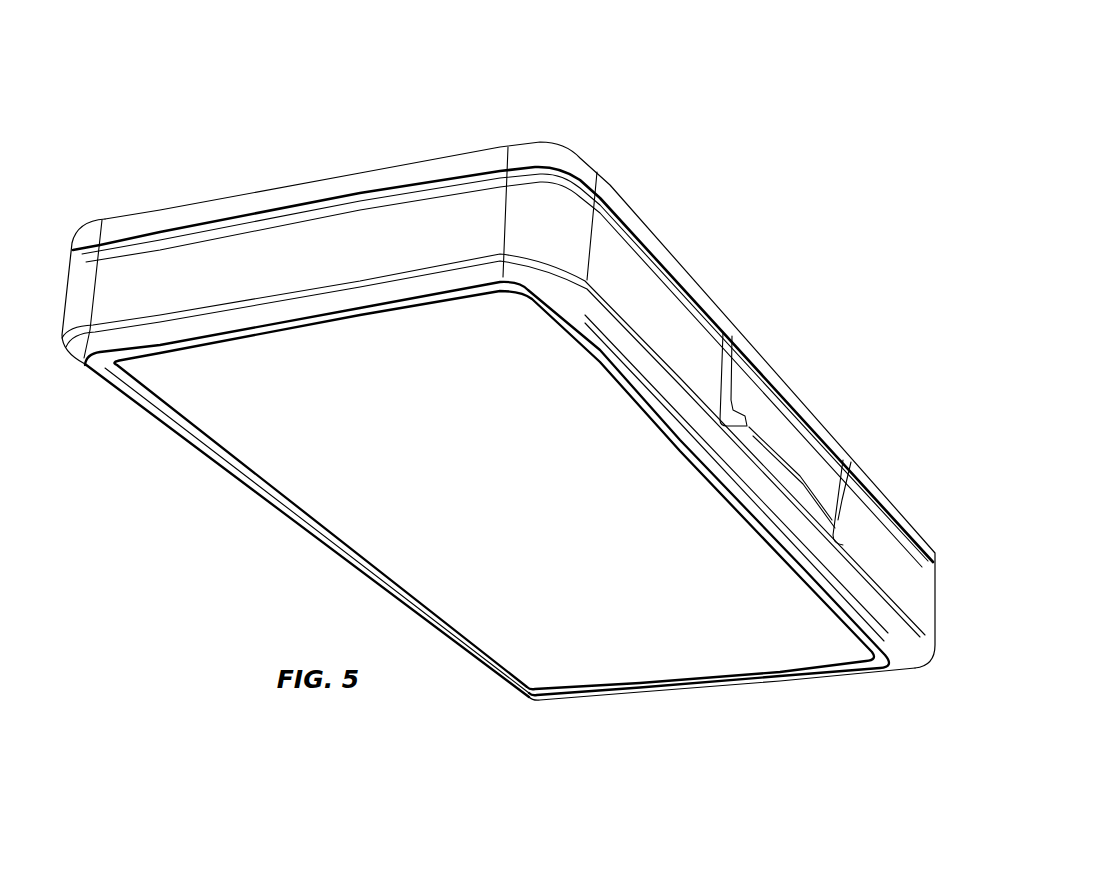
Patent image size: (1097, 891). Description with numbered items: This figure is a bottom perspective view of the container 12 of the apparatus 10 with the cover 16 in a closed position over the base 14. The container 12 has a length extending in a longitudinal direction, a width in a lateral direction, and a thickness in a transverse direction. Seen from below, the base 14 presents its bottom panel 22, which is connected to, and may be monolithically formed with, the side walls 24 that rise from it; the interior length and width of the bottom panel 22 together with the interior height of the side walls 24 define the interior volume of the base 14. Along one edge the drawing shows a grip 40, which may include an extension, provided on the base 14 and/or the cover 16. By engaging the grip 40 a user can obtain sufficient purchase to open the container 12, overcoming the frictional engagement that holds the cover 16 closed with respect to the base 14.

The apparatus 10 is at (652, 83).
The container 12 is at (688, 228).
The base 14 is at (798, 684).
The cover 16 is at (714, 291).
The bottom panel 22 is at (339, 447).
The side walls 24 is at (292, 267).
The grip 40 is at (783, 453).